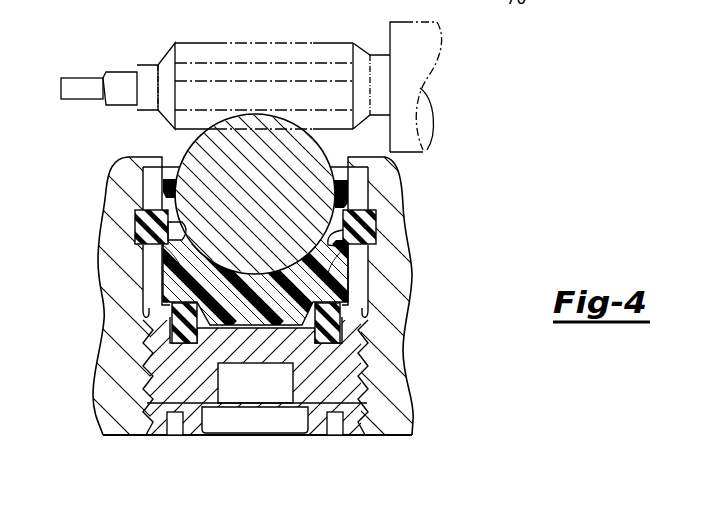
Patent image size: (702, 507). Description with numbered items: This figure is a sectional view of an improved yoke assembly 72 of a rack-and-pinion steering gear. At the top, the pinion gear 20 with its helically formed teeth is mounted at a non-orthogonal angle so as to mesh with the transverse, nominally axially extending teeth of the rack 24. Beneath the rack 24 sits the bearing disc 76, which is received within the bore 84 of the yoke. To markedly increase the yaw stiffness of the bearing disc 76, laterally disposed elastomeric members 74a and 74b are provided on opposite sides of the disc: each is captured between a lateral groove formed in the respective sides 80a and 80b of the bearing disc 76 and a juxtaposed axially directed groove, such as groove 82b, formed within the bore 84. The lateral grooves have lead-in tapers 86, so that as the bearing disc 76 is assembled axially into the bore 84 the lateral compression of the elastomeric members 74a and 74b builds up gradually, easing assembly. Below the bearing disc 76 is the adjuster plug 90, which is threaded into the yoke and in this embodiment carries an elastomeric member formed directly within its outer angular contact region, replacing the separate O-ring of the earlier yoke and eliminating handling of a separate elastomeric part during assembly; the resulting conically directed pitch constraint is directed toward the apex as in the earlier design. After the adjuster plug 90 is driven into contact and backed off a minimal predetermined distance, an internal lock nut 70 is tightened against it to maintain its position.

The pinion gear 20 is at (283, 44).
The rack 24 is at (197, 147).
The internal lock nut 70 is at (327, 436).
The yoke assembly 72 is at (90, 244).
The laterally disposed elastomeric member 74a is at (135, 211).
The laterally disposed elastomeric member 74b is at (377, 222).
The bearing disc 76 is at (368, 300).
The side of the bearing disc 80a is at (168, 272).
The side of the bearing disc 80b is at (347, 275).
The axially directed groove 82b is at (158, 250).
The bore 84 is at (165, 318).
The lead-in tapers 86 is at (163, 188).
The adjuster plug 90 is at (362, 360).